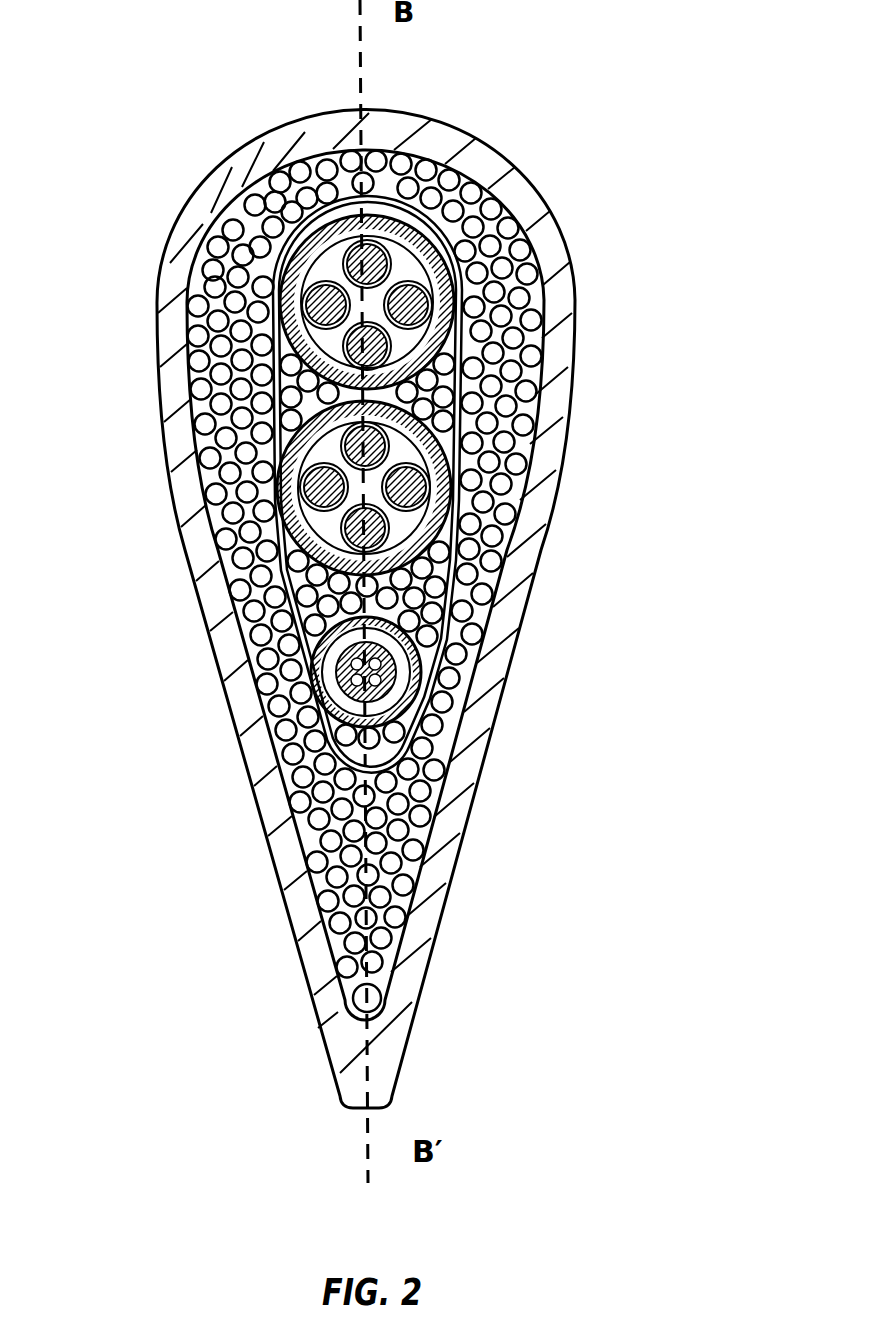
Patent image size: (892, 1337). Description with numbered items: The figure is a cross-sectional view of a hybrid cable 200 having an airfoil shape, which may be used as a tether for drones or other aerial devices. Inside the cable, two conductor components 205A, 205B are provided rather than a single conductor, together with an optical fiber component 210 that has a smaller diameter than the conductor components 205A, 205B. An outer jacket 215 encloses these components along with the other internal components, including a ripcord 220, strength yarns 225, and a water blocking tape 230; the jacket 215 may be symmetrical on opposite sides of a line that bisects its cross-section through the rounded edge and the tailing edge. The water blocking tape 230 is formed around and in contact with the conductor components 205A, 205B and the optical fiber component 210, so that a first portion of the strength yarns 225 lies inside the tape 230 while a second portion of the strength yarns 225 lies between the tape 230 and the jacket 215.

The hybrid cable 200 is at (167, 108).
The conductor component 205A is at (462, 224).
The conductor component 205B is at (452, 465).
The optical fiber component 210 is at (440, 637).
The outer jacket 215 is at (552, 549).
The ripcord 220 is at (381, 1000).
The strength yarns 225 is at (407, 855).
The water blocking tape 230 is at (490, 687).